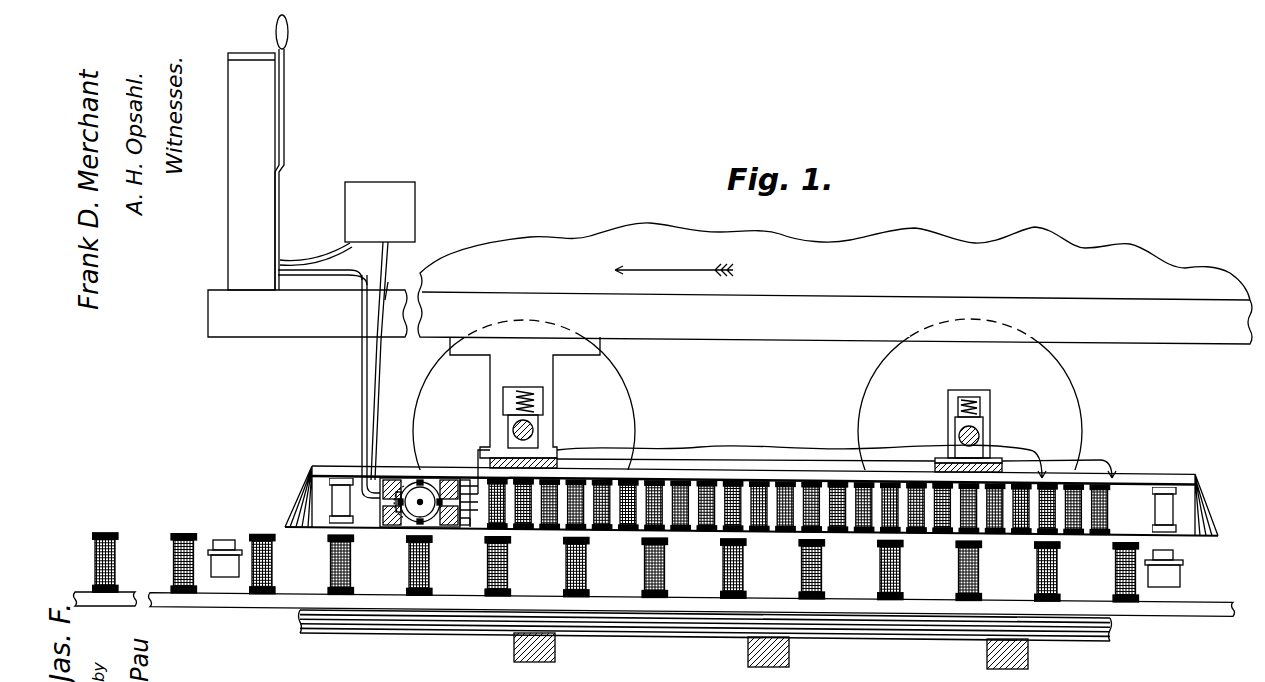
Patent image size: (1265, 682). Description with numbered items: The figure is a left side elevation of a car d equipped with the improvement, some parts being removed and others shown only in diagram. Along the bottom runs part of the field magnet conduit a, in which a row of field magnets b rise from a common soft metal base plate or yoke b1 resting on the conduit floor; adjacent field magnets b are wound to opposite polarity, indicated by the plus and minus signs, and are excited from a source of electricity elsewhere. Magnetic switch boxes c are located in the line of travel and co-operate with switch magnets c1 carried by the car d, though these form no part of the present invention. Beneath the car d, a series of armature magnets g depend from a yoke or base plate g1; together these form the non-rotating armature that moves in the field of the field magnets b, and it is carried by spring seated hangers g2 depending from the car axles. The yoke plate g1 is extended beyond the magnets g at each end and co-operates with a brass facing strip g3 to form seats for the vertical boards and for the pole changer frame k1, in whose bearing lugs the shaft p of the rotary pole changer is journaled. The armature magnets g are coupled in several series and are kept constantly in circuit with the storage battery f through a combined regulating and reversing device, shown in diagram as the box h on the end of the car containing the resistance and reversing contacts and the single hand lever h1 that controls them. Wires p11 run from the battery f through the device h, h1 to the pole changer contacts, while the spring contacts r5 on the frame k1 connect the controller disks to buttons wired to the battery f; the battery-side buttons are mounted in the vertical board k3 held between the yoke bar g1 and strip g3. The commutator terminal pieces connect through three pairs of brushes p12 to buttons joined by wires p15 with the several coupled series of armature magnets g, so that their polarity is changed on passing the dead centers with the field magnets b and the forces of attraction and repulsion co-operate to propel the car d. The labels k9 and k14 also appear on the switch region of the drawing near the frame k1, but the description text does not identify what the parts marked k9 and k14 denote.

The field magnet conduit a is at (514, 636).
The field magnets b is at (170, 564).
The base plate or yoke b1 is at (300, 600).
The magnetic switch boxes c is at (226, 547).
The switch magnets c1 is at (338, 495).
The car d is at (870, 294).
The storage battery f is at (394, 198).
The armature magnets g is at (905, 484).
The yoke or base plate g1 is at (773, 470).
The spring seated hangers g2 is at (556, 462).
The brass facing strip g3 is at (392, 530).
The box of regulating and reversing device h is at (240, 135).
The hand lever h1 is at (285, 128).
The pole changer frame k1 is at (398, 530).
The vertical board k3 is at (381, 478).
The switch contacts k9 is at (466, 484).
The switch terminal strip k14 is at (450, 528).
The shaft p is at (421, 500).
The wires p11 is at (324, 262).
The commutator brushes p12 is at (414, 485).
The wires p15 is at (681, 448).
The spring contacts r5 is at (386, 282).